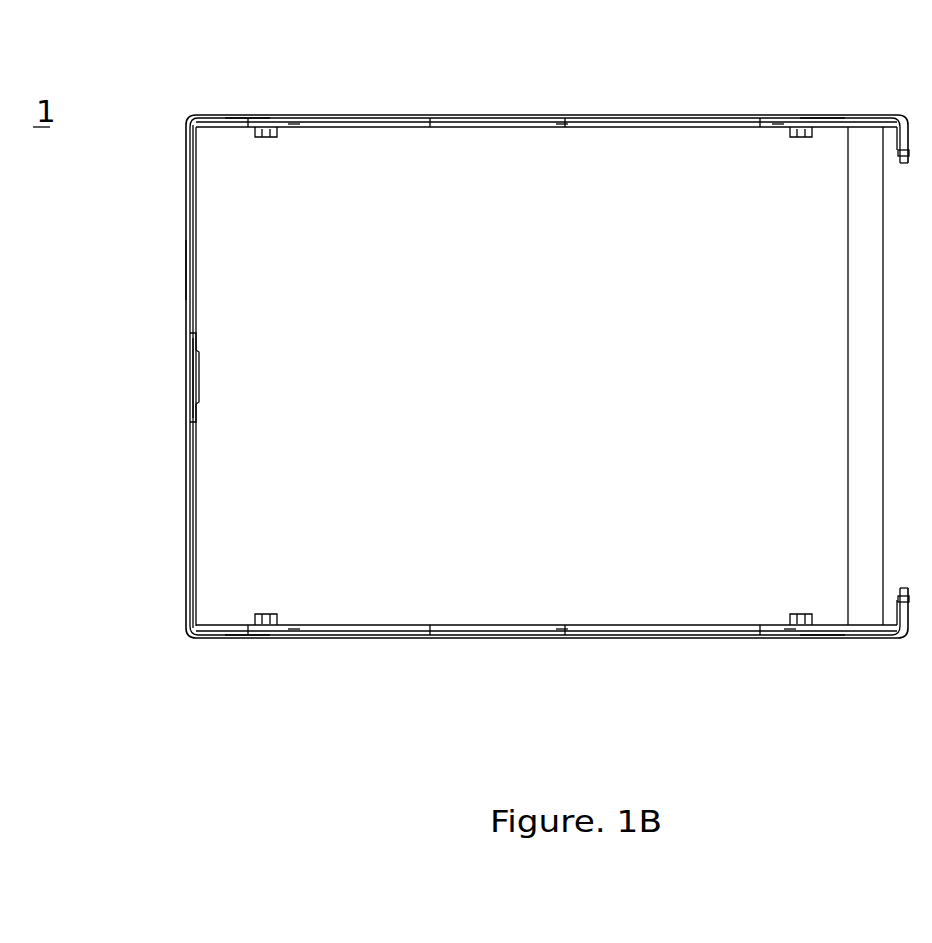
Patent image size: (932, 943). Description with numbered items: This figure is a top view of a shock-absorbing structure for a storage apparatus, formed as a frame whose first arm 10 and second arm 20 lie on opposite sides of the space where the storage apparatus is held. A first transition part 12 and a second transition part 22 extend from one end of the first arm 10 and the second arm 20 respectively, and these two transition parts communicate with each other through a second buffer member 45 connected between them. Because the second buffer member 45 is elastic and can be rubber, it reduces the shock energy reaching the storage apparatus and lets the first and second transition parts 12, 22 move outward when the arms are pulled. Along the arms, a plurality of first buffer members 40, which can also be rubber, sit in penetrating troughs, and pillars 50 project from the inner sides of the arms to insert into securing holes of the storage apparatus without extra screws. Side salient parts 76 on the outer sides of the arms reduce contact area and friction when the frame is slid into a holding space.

The first arm 10 is at (518, 692).
The first transition part 12 is at (188, 520).
The second arm 20 is at (543, 45).
The second transition part 22 is at (188, 270).
The first buffer members 40 is at (288, 128).
The second buffer member 45 is at (192, 378).
The pillars 50 is at (255, 138).
The side salient parts 76 is at (243, 117).